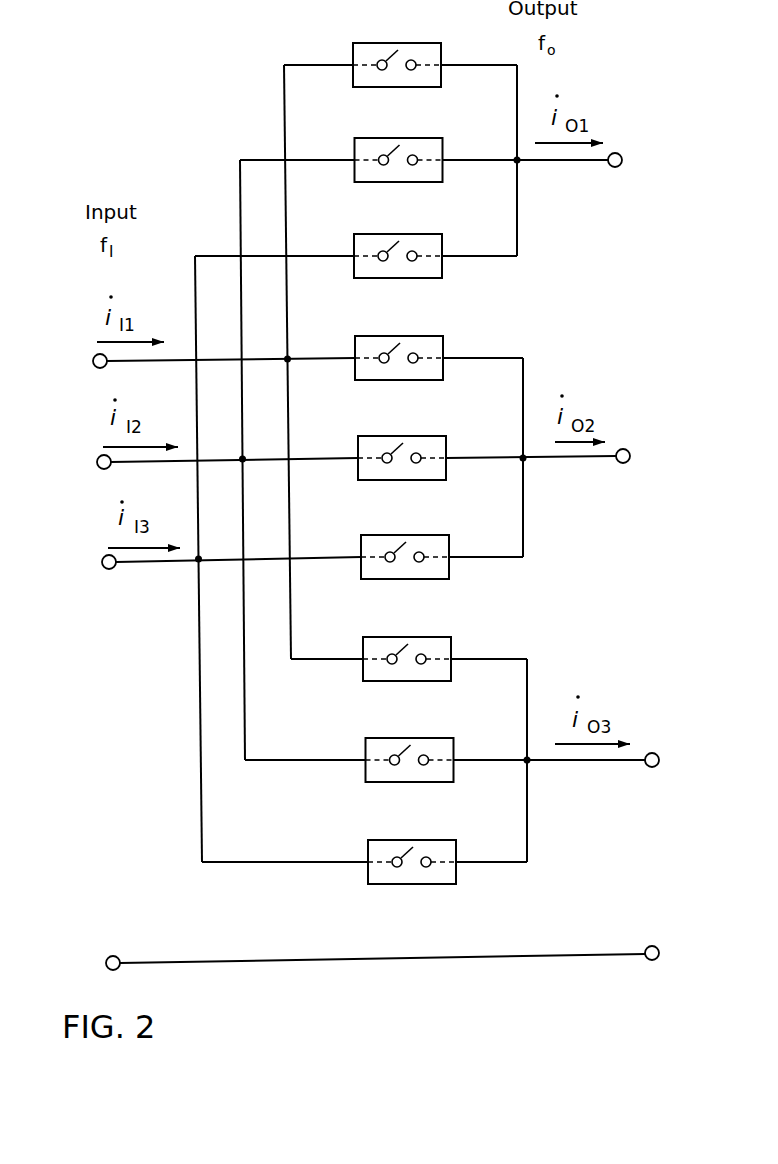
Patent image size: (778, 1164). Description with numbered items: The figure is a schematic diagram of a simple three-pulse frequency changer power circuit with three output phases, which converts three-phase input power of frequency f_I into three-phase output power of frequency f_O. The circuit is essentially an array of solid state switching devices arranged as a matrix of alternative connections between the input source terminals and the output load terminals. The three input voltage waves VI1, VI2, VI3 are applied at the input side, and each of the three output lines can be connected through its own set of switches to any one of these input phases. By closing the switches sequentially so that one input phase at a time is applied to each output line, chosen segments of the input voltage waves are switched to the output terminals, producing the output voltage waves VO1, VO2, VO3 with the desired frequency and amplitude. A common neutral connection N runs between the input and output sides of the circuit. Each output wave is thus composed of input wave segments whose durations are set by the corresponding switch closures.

The input voltage wave VI1 is at (71, 369).
The input voltage wave VI2 is at (79, 471).
The input voltage wave VI3 is at (84, 572).
The output voltage wave VO1 is at (636, 137).
The output voltage wave VO2 is at (648, 449).
The output voltage wave VO3 is at (676, 750).
The neutral terminal N is at (382, 941).